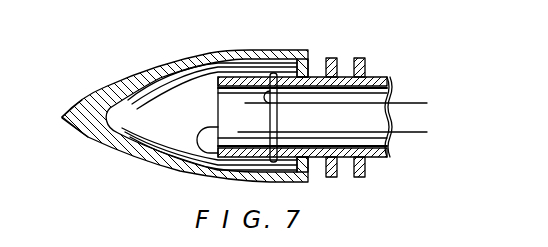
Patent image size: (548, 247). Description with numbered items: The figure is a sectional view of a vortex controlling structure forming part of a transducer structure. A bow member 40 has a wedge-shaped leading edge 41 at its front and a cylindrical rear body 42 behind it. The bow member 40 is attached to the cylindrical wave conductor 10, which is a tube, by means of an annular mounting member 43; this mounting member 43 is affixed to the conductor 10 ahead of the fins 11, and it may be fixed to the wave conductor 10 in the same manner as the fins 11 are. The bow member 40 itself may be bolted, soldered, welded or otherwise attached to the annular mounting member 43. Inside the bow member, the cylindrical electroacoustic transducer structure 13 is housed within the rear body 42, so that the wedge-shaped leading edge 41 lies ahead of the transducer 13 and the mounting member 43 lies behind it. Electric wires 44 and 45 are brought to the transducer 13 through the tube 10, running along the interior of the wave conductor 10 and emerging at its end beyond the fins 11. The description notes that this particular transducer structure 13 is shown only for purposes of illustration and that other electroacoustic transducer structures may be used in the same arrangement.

The wave conductor 10 is at (374, 77).
The fins 11 is at (332, 59).
The electroacoustic transducer structure 13 is at (217, 103).
The bow member 40 is at (140, 168).
The wedge-shaped leading edge 41 is at (63, 115).
The cylindrical rear body 42 is at (245, 50).
The annular mounting member 43 is at (311, 63).
The electric wire 44 is at (427, 105).
The electric wire 45 is at (427, 128).